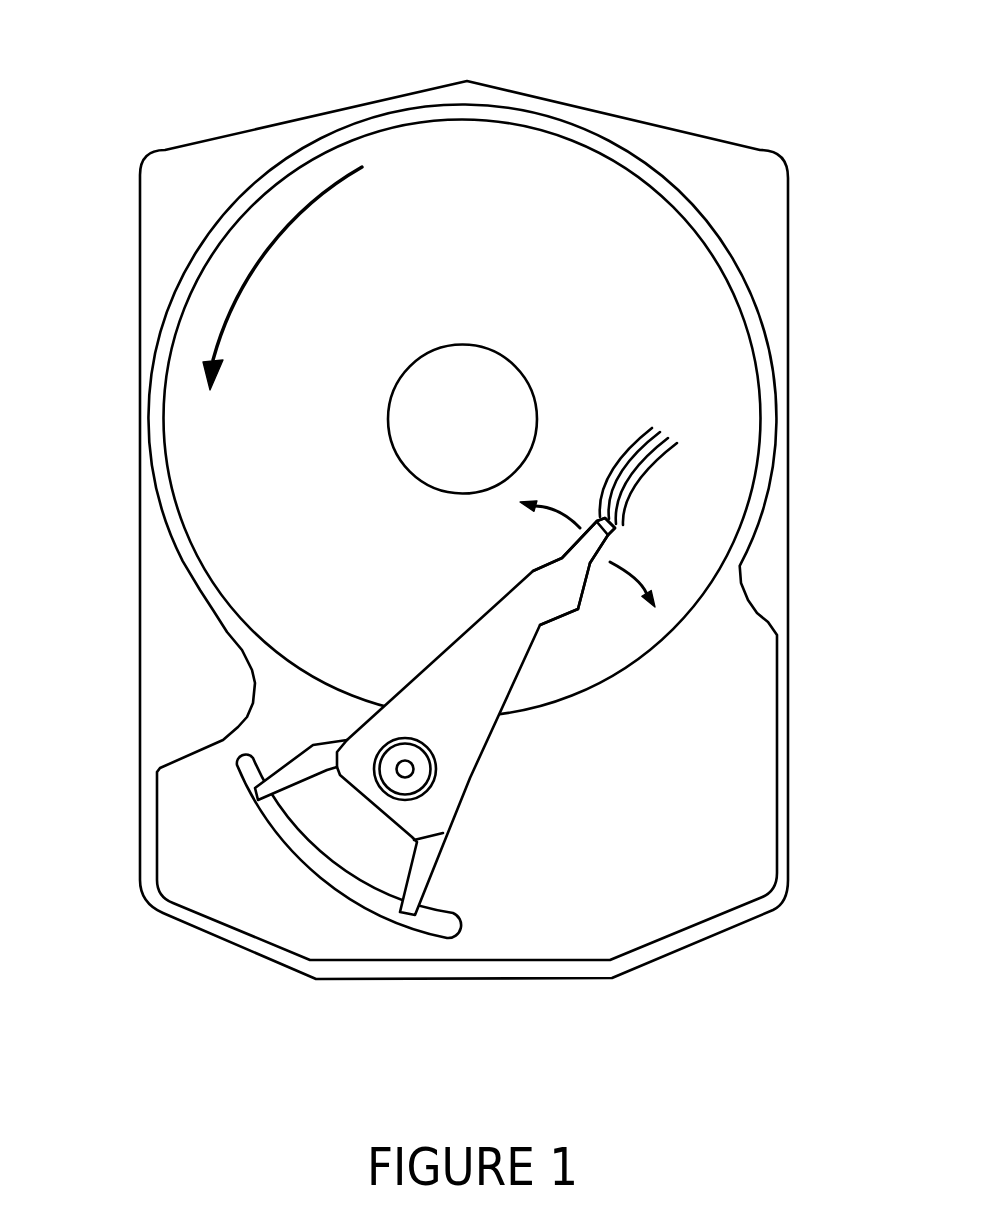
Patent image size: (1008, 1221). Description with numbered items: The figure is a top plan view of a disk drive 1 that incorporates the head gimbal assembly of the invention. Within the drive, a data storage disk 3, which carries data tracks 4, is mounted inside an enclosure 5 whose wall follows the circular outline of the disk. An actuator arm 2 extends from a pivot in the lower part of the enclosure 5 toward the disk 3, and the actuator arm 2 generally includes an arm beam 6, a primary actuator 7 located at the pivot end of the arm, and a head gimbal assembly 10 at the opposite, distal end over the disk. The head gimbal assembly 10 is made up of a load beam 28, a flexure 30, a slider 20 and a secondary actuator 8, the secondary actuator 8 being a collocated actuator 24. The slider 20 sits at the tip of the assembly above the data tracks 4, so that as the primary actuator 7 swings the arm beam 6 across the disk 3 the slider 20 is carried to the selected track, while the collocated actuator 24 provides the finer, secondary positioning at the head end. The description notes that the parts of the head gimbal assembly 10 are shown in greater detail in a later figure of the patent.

The disk drive 1 is at (287, 64).
The actuator arm 2 is at (546, 634).
The data storage disk 3 is at (545, 218).
The data tracks 4 is at (655, 410).
The enclosure 5 is at (102, 286).
The arm beam 6 is at (552, 597).
The primary actuator 7 is at (407, 927).
The secondary actuator 8 is at (608, 535).
The head gimbal assembly 10 is at (645, 502).
The slider 20 is at (613, 525).
The collocated actuator 24 is at (599, 549).
The load beam 28 is at (584, 586).
The flexure 30 is at (559, 617).